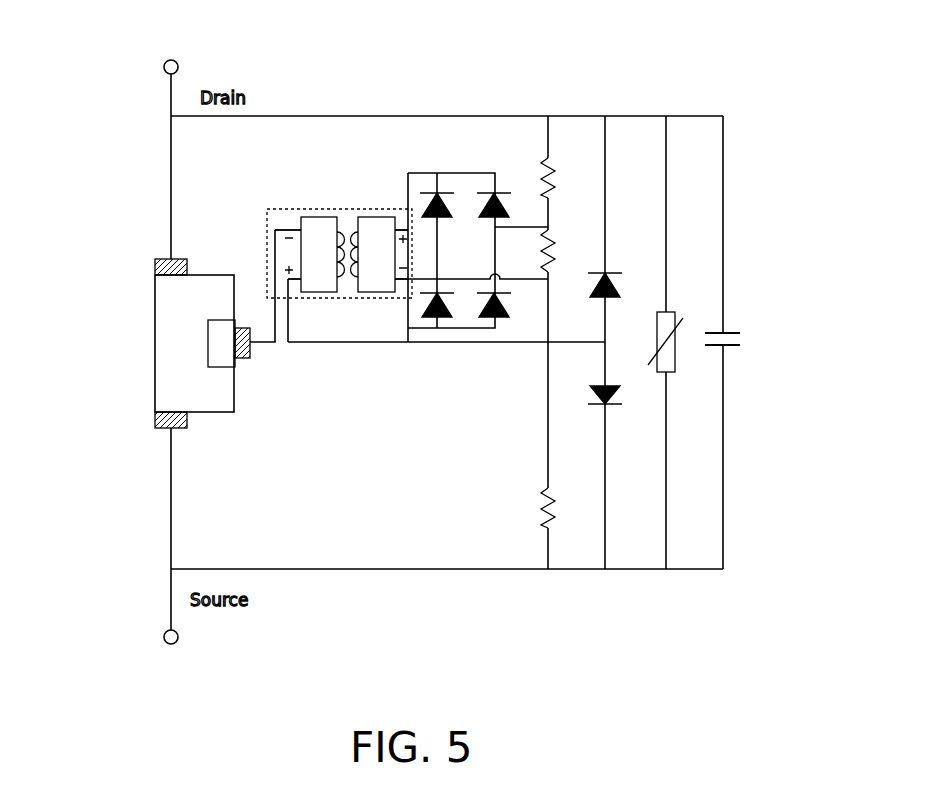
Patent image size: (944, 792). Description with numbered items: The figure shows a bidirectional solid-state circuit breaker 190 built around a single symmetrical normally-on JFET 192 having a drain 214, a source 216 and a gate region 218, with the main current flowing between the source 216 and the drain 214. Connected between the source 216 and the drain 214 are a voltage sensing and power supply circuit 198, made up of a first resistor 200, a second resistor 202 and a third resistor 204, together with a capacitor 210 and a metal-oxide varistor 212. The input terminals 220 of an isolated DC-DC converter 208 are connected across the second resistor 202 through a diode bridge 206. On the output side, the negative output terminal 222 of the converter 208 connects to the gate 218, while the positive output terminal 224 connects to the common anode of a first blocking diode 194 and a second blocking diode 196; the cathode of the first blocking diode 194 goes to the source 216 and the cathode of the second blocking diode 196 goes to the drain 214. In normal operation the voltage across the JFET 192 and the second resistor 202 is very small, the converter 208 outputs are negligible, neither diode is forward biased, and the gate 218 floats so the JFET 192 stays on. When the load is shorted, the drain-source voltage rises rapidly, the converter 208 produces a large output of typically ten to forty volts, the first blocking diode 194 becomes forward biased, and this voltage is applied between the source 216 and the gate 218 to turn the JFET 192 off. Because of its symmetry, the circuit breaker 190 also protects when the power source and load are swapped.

The bidirectional solid-state circuit breaker 190 is at (617, 60).
The symmetrical normally-on JFET 192 is at (167, 397).
The first blocking diode 194 is at (590, 390).
The second blocking diode 196 is at (605, 299).
The voltage sensing and power supply circuit 198 is at (740, 187).
The first resistor 200 is at (549, 160).
The second resistor 202 is at (549, 230).
The third resistor 204 is at (548, 488).
The diode bridge 206 is at (507, 150).
The isolated DC-DC converter 208 is at (268, 210).
The capacitor 210 is at (733, 335).
The metal-oxide varistor 212 is at (676, 365).
The drain 214 is at (155, 267).
The source 216 is at (188, 420).
The gate region 218 is at (253, 348).
The input terminals 220 is at (410, 232).
The negative output terminal 222 is at (275, 230).
The positive output terminal 224 is at (282, 278).